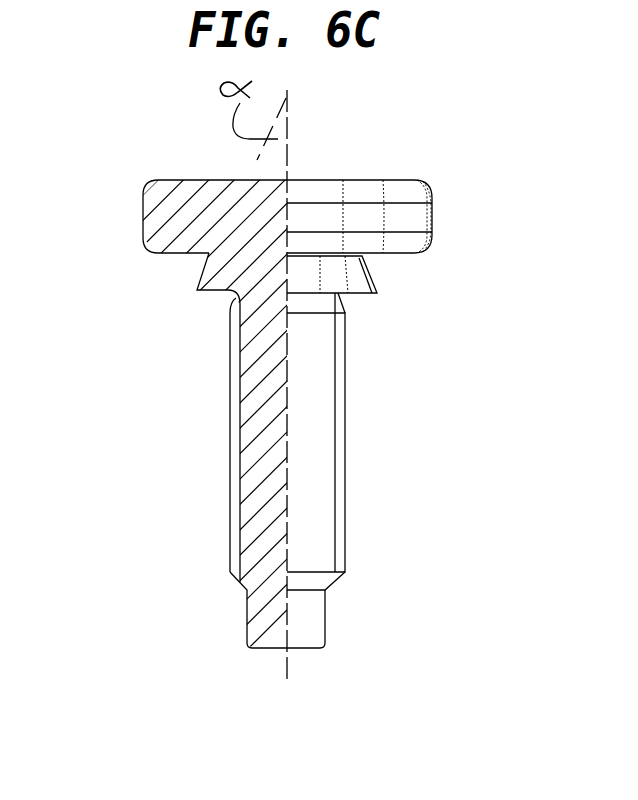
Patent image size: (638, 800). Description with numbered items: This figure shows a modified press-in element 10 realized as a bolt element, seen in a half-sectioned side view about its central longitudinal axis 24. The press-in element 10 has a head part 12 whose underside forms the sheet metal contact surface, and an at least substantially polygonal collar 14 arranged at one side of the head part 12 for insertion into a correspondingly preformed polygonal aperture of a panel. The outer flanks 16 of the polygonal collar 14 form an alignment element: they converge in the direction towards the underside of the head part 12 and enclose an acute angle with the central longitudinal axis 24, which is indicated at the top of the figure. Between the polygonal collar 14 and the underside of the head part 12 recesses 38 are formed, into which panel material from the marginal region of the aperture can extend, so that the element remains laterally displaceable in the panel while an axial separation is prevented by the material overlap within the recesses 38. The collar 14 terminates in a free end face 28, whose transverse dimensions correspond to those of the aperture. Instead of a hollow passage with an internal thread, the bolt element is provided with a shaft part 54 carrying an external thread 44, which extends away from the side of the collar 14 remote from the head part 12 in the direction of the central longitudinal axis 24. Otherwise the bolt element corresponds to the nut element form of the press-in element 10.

The press-in element 10 is at (393, 408).
The head part 12 is at (422, 218).
The polygonal collar 14 is at (367, 278).
The outer flanks 16 is at (200, 272).
The central longitudinal axis 24 is at (290, 156).
The free end face of the collar 28 is at (218, 295).
The recesses 38 is at (205, 255).
The external thread 44 is at (345, 467).
The shaft part 54 is at (345, 503).